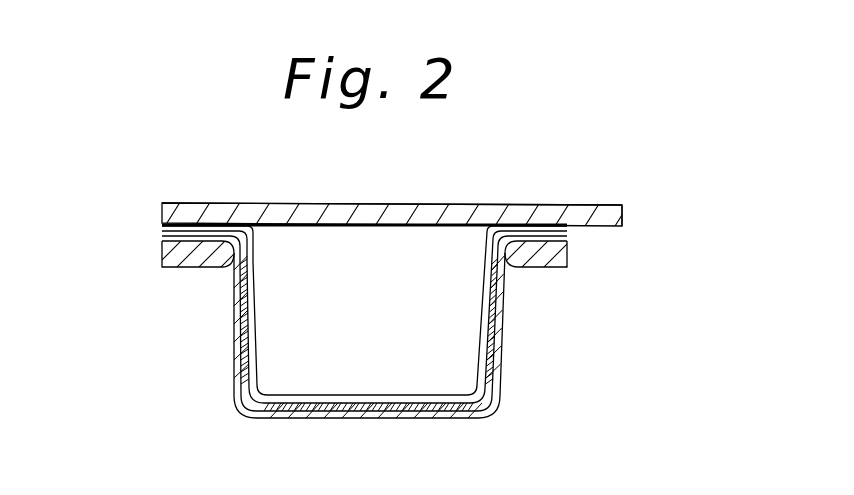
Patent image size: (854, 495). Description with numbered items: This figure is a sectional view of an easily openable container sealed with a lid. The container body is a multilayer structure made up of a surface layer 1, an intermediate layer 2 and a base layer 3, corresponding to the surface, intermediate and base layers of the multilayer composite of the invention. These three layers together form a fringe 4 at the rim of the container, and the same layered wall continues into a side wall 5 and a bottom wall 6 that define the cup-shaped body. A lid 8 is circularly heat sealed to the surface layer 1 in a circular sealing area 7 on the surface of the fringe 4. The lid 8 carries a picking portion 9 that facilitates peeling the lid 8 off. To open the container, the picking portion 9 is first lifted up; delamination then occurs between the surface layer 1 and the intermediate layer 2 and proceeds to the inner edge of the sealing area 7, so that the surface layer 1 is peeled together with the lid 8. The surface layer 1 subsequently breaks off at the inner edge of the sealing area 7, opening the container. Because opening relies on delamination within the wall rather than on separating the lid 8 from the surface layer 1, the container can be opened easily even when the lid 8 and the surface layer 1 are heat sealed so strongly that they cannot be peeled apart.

The surface layer 1 is at (162, 229).
The intermediate layer 2 is at (162, 236).
The base layer 3 is at (162, 265).
The fringe 4 is at (550, 257).
The side wall 5 is at (505, 344).
The bottom wall 6 is at (387, 418).
The sealing area 7 is at (200, 223).
The lid 8 is at (538, 205).
The picking portion 9 is at (624, 214).